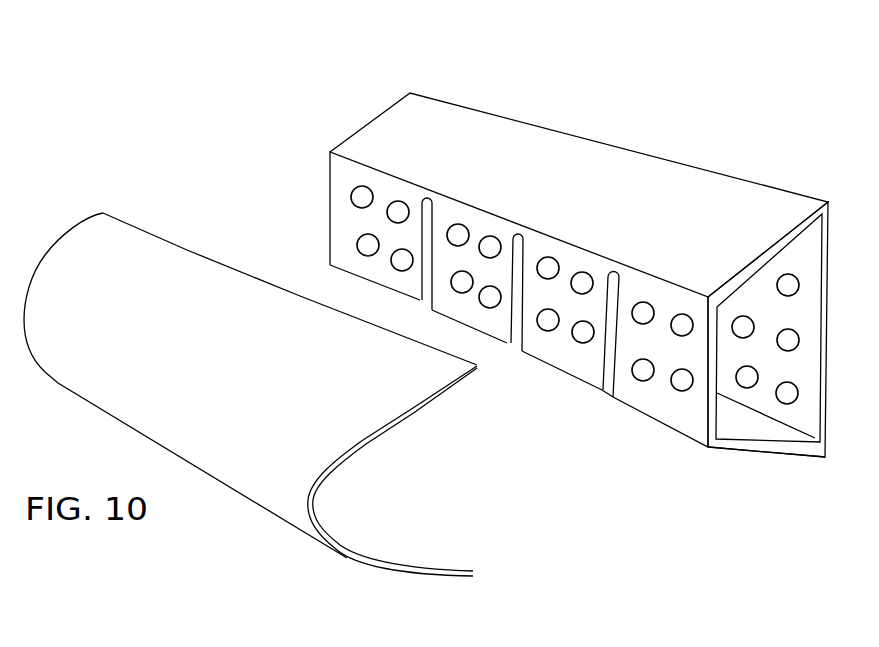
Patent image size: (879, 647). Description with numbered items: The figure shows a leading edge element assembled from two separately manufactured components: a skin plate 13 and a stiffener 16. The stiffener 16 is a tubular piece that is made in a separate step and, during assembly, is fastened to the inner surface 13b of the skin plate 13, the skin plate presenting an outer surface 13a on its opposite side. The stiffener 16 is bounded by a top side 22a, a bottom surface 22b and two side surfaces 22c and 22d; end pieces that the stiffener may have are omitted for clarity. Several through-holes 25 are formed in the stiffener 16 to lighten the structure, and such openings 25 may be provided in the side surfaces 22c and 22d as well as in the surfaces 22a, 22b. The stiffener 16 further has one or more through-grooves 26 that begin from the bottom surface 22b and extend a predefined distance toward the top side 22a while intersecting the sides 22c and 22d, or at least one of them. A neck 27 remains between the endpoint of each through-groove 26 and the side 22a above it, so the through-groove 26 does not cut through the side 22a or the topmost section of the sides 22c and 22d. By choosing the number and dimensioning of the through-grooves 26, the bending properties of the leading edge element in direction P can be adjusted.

The skin plate 13 is at (72, 176).
The outer surface of the skin plate 13a is at (238, 331).
The inner surface of the skin plate 13b is at (380, 430).
The stiffener 16 is at (296, 108).
The top side 22a is at (537, 172).
The bottom surface 22b is at (782, 453).
The side surface 22c is at (345, 215).
The side surface 22d is at (828, 246).
The through-hole 25 is at (682, 391).
The through-groove 26 is at (603, 405).
The neck 27 is at (615, 265).
The direction P is at (569, 402).